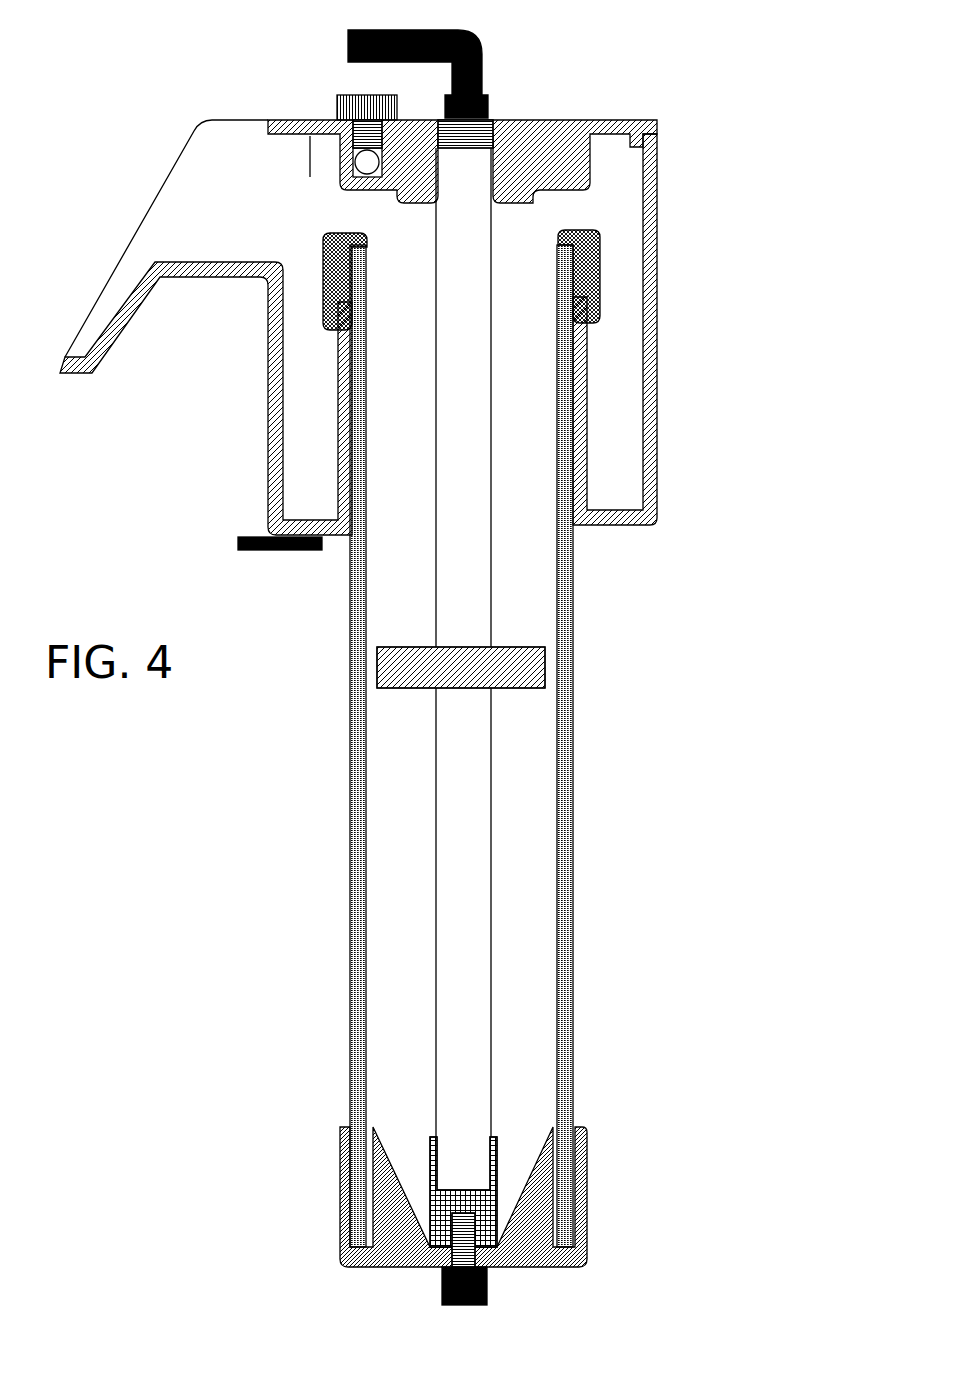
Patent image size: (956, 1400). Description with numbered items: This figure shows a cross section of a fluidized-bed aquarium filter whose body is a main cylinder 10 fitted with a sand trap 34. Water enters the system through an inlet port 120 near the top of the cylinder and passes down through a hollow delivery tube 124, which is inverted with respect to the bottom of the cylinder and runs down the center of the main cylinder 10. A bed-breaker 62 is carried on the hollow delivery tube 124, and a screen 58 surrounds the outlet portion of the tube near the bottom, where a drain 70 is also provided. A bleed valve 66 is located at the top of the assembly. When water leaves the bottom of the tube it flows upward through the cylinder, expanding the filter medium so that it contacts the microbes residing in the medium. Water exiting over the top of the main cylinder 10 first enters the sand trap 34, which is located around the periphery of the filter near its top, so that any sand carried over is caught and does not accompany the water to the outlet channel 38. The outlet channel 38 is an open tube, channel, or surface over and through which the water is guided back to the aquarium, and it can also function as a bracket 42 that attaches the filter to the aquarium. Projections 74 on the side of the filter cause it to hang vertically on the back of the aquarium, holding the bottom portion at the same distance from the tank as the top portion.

The main cylinder 10 is at (362, 912).
The sand trap 34 is at (617, 413).
The outlet channel 38 is at (217, 157).
The bracket 42 is at (112, 337).
The screen 58 is at (487, 1200).
The bed-breaker 62 is at (525, 675).
The bleed valve 66 is at (372, 135).
The drain 70 is at (463, 1253).
The projections 74 is at (240, 537).
The inlet port 120 is at (485, 90).
The hollow delivery tube 124 is at (472, 947).